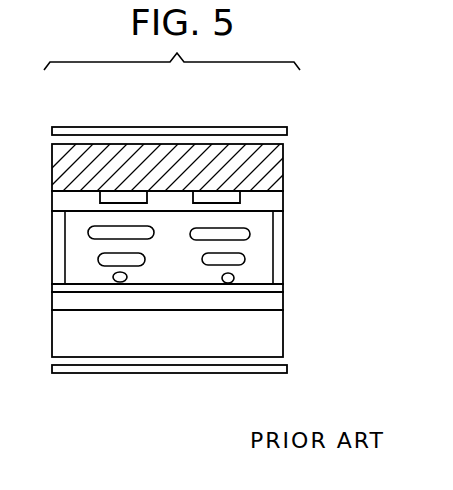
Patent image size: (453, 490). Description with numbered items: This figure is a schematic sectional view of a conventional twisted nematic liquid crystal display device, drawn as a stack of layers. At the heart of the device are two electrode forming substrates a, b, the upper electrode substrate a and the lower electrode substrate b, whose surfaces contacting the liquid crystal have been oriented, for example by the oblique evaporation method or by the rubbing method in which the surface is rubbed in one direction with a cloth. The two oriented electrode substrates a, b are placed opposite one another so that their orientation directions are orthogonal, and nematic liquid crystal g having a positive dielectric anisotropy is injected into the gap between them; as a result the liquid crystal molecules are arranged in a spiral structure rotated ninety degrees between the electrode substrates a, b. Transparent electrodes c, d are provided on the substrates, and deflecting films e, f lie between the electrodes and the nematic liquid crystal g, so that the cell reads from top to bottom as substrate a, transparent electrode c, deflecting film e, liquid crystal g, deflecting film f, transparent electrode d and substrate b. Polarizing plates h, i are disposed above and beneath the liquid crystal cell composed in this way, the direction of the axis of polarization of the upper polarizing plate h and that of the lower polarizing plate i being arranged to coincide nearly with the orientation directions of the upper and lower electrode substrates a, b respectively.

The polarizing plate h is at (275, 127).
The electrode forming substrate a is at (273, 157).
The transparent electrode c is at (232, 192).
The deflecting film e is at (274, 205).
The nematic liquid crystal g is at (262, 243).
The deflecting film f is at (277, 290).
The transparent electrode d is at (273, 307).
The electrode forming substrate b is at (270, 340).
The polarizing plate i is at (278, 366).